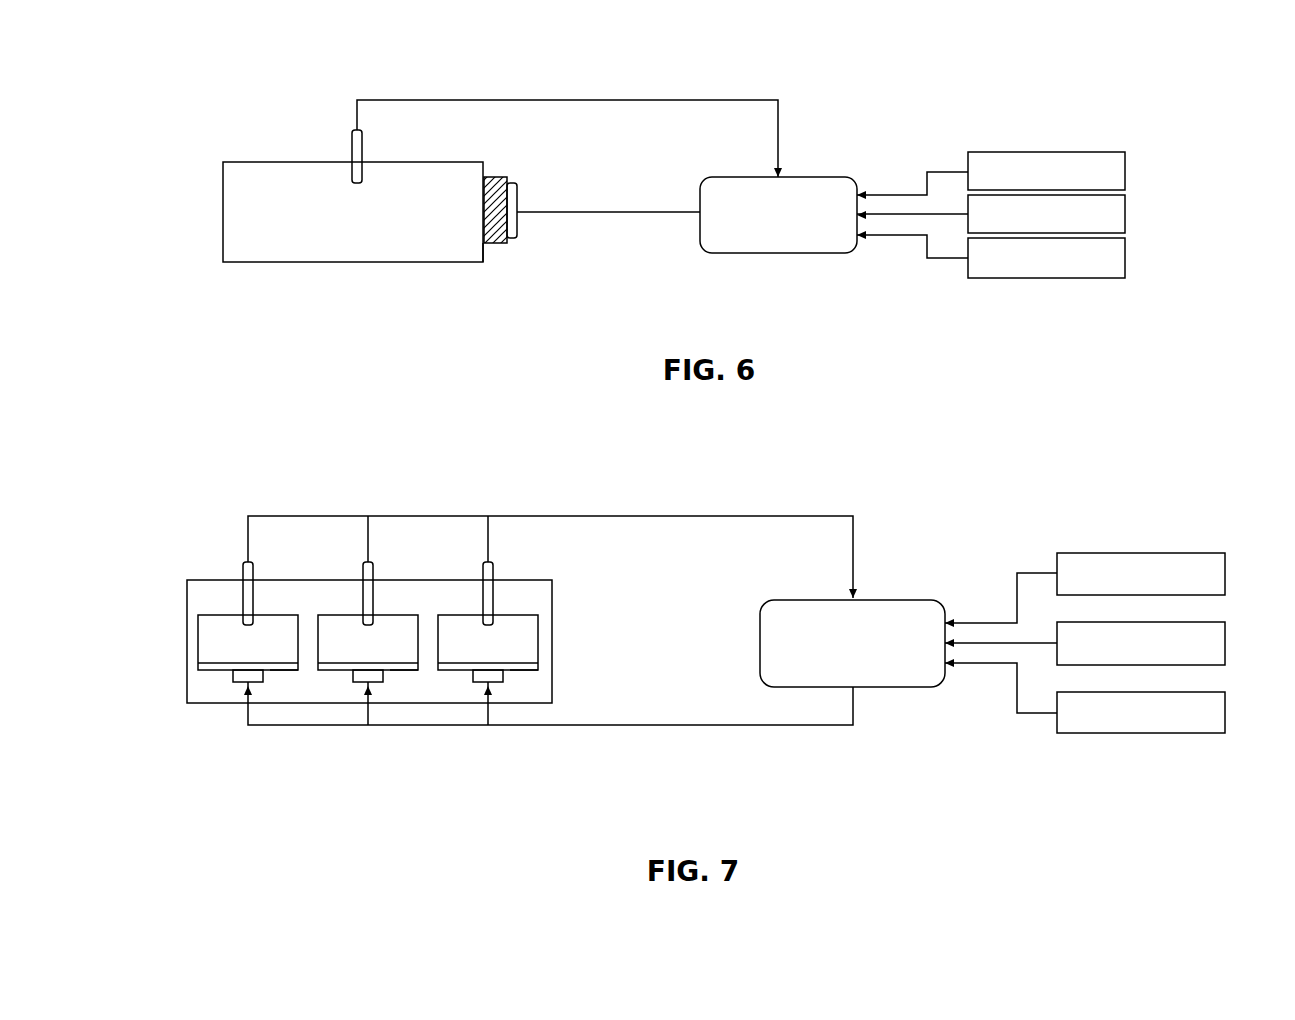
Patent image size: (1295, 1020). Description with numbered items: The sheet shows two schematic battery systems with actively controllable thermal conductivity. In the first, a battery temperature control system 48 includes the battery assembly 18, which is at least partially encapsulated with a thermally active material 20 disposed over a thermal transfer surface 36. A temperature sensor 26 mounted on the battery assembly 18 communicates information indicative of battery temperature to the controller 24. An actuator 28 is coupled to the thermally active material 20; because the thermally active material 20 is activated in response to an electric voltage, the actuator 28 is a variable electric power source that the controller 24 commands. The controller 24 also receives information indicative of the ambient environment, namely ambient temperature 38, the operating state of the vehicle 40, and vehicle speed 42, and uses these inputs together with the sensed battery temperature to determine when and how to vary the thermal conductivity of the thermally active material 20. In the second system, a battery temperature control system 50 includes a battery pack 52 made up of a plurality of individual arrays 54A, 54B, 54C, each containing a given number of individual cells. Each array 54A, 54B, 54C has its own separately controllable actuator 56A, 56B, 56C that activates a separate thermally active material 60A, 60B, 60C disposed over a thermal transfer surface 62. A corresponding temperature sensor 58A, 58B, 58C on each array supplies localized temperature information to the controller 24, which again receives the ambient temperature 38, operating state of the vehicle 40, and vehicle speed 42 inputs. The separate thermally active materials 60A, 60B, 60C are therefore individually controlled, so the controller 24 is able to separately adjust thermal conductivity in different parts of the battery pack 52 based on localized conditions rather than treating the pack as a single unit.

In FIG. 6, the battery assembly 18 is at (348, 256).
In FIG. 6, the thermally active material 20 is at (495, 177).
In FIG. 6, the controller 24 is at (775, 240).
In FIG. 7, the controller 24 is at (885, 617).
In FIG. 6, the temperature sensor 26 is at (348, 148).
In FIG. 6, the actuator 28 is at (519, 195).
In FIG. 6, the thermal transfer surface 36 is at (490, 253).
In FIG. 6, the ambient temperature 38 is at (1127, 170).
In FIG. 7, the ambient temperature 38 is at (1122, 553).
In FIG. 6, the operating state of the vehicle 40 is at (1127, 212).
In FIG. 7, the operating state of the vehicle 40 is at (1228, 645).
In FIG. 6, the vehicle speed 42 is at (1127, 258).
In FIG. 7, the vehicle speed 42 is at (1120, 735).
In FIG. 6, the battery temperature control system 48 is at (1085, 70).
In FIG. 7, the battery temperature control system 50 is at (190, 472).
In FIG. 7, the battery pack 52 is at (203, 768).
In FIG. 7, the array 54A is at (258, 620).
In FIG. 7, the array 54B is at (352, 625).
In FIG. 7, the array 54C is at (518, 632).
In FIG. 7, the actuator 56A is at (233, 675).
In FIG. 7, the actuator 56B is at (362, 682).
In FIG. 7, the actuator 56C is at (475, 683).
In FIG. 7, the temperature sensor 58A is at (241, 575).
In FIG. 7, the temperature sensor 58B is at (375, 583).
In FIG. 7, the temperature sensor 58C is at (495, 592).
In FIG. 7, the thermally active material 60A is at (207, 668).
In FIG. 7, the thermally active material 60B is at (343, 667).
In FIG. 7, the thermally active material 60C is at (540, 668).
In FIG. 7, the thermal transfer surface 62 is at (283, 672).